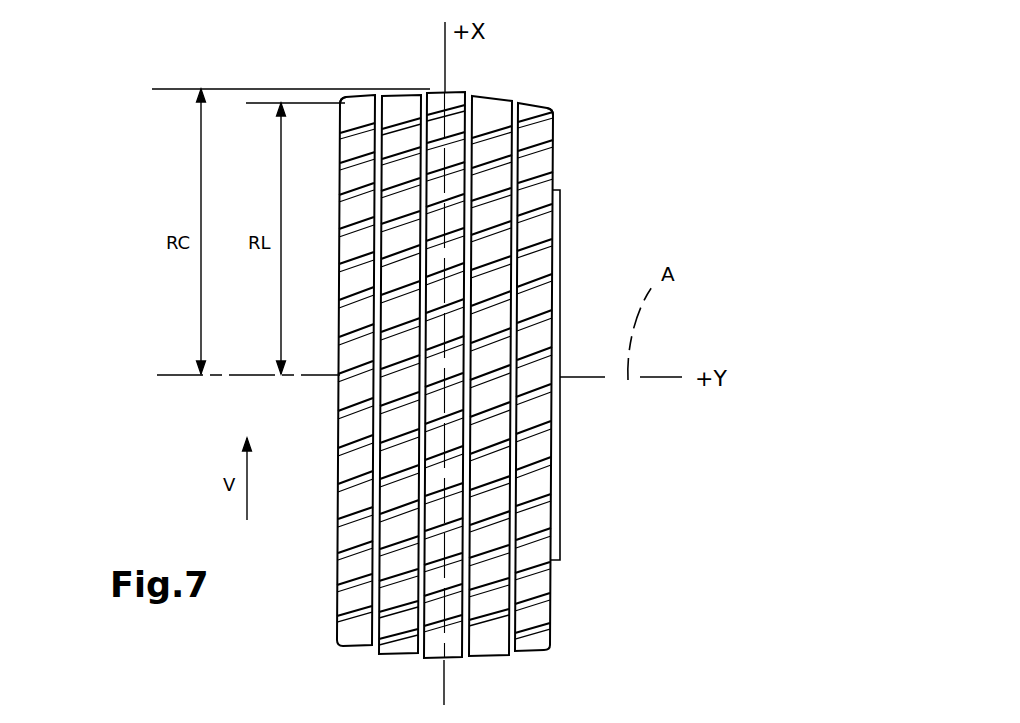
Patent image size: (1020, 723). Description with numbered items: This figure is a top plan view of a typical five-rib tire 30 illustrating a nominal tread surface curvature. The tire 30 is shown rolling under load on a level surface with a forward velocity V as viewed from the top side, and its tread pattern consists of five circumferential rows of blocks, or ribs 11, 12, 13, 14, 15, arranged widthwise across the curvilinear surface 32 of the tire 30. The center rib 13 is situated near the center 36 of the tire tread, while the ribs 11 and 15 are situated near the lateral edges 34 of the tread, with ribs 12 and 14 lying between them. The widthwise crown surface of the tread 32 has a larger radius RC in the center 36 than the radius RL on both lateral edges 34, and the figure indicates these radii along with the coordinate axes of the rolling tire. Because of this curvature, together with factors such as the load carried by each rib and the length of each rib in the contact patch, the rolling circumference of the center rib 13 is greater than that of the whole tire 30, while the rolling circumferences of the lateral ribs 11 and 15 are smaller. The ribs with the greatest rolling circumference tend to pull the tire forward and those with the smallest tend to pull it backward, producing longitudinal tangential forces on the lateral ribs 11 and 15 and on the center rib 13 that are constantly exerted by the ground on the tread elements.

The rib 11 is at (340, 652).
The rib 12 is at (388, 664).
The center rib 13 is at (432, 668).
The rib 14 is at (485, 672).
The rib 15 is at (540, 665).
The tire 30 is at (460, 377).
The curvilinear surface 32 is at (438, 387).
The lateral edges 34 is at (350, 104).
The center 36 is at (447, 92).